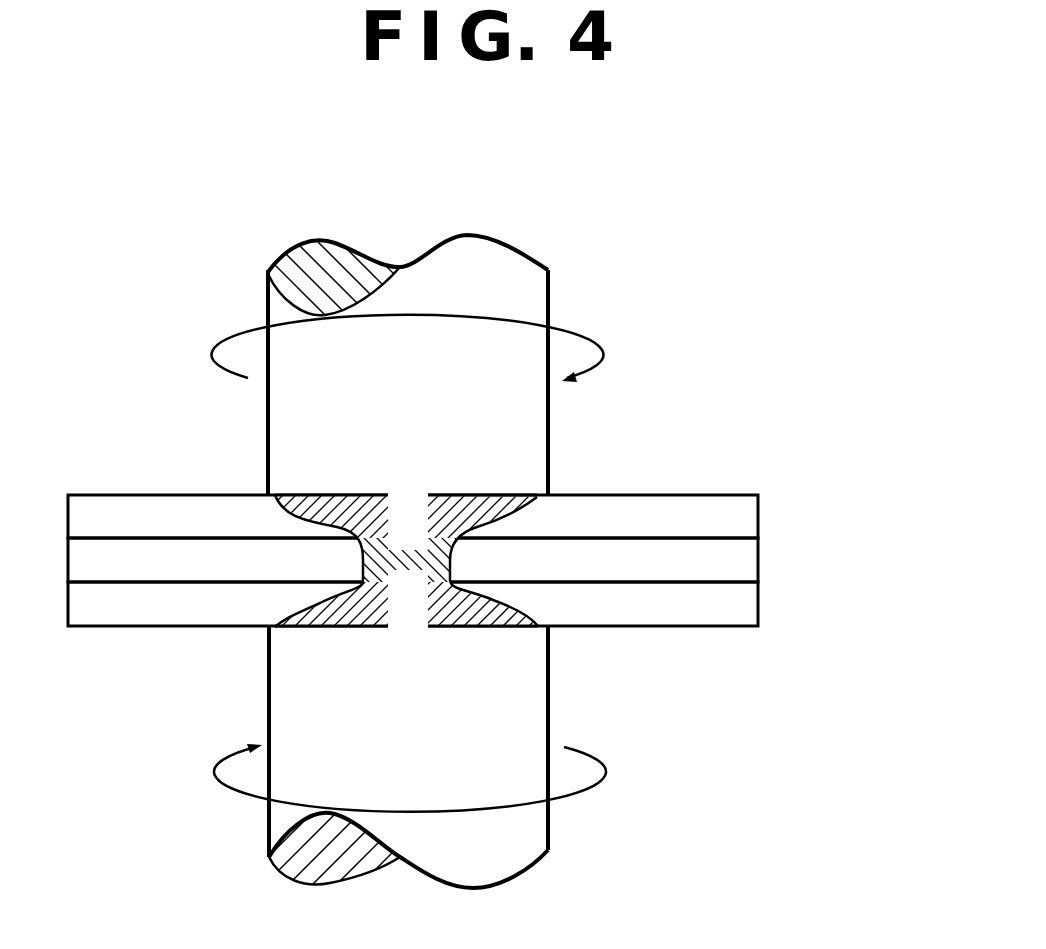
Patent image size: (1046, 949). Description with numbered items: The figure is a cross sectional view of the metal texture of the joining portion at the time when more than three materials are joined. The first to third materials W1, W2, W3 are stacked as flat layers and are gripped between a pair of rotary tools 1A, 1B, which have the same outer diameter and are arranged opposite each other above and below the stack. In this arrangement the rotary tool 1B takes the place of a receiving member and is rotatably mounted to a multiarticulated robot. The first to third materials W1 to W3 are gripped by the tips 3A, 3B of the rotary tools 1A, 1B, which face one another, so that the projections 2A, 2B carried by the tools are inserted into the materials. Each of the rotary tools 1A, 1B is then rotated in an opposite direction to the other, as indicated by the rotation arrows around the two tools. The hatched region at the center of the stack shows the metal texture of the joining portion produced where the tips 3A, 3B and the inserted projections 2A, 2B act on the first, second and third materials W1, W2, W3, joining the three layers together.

The rotary tool 1A is at (547, 405).
The rotary tool 1B is at (548, 712).
The projection 2A is at (407, 503).
The projection 2B is at (407, 613).
The tip 3A is at (477, 497).
The tip 3B is at (477, 613).
The first material W1 is at (758, 503).
The second material W2 is at (758, 553).
The third material W3 is at (758, 592).